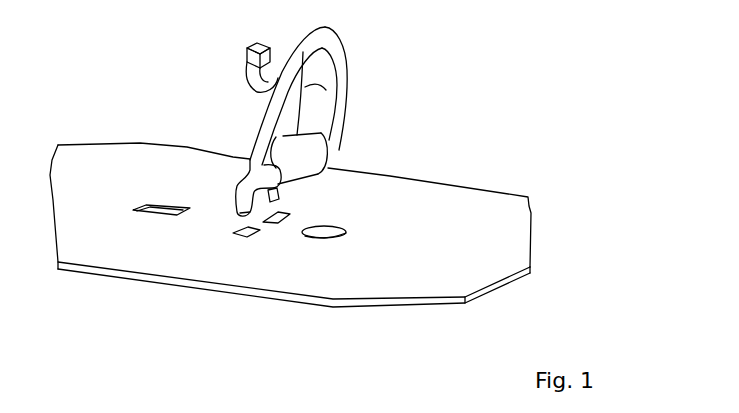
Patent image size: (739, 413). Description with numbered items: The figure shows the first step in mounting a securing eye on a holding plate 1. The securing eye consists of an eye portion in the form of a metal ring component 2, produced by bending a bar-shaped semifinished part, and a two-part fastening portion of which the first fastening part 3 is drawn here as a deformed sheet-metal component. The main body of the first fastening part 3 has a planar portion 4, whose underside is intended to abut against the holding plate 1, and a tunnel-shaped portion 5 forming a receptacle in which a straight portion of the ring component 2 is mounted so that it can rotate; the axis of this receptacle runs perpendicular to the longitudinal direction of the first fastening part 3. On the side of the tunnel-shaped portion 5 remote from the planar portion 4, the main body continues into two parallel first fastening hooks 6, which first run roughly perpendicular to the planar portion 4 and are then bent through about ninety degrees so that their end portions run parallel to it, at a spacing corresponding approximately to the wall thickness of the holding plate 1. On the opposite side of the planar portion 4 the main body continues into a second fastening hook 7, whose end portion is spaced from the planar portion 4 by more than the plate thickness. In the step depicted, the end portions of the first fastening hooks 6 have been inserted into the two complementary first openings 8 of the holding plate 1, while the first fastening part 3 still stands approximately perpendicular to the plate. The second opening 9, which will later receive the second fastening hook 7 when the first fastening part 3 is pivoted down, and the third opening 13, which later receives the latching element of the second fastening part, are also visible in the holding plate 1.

The holding plate 1 is at (92, 172).
The ring component 2 is at (340, 47).
The first fastening part 3 is at (300, 115).
The planar portion 4 is at (343, 86).
The tunnel-shaped portion 5 is at (307, 155).
The first fastening hooks 6 is at (239, 186).
The second fastening hook 7 is at (241, 62).
The first openings 8 is at (276, 222).
The second opening 9 is at (158, 203).
The third opening 13 is at (325, 247).